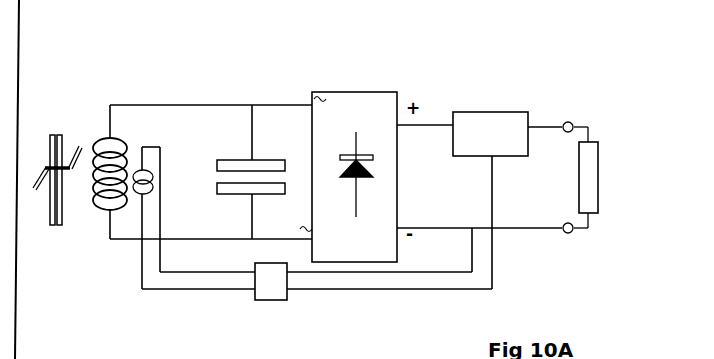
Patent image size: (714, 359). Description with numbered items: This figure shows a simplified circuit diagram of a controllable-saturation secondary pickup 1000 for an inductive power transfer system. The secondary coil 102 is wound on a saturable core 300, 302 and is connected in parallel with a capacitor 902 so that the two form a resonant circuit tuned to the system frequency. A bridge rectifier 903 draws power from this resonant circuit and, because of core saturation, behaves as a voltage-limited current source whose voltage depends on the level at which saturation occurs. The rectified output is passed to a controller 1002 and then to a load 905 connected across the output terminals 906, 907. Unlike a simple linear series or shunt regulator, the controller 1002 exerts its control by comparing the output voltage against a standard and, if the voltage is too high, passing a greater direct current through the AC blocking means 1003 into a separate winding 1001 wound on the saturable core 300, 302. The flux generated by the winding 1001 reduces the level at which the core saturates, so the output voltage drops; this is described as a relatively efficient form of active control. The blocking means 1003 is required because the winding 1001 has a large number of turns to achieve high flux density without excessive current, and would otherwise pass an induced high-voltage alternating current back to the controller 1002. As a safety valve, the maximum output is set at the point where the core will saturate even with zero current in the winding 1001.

The secondary coil 102 is at (110, 239).
The saturable core 300 is at (58, 133).
The saturable core 302 is at (81, 122).
The capacitor 902 is at (288, 160).
The bridge rectifier 903 is at (407, 62).
The load 905 is at (599, 208).
The terminal 906 is at (568, 223).
The terminal 907 is at (569, 122).
The controllable-saturation secondary pickup circuit 1000 is at (518, 48).
The separate winding 1001 is at (160, 147).
The controller 1002 is at (544, 80).
The AC blocking means 1003 is at (255, 300).